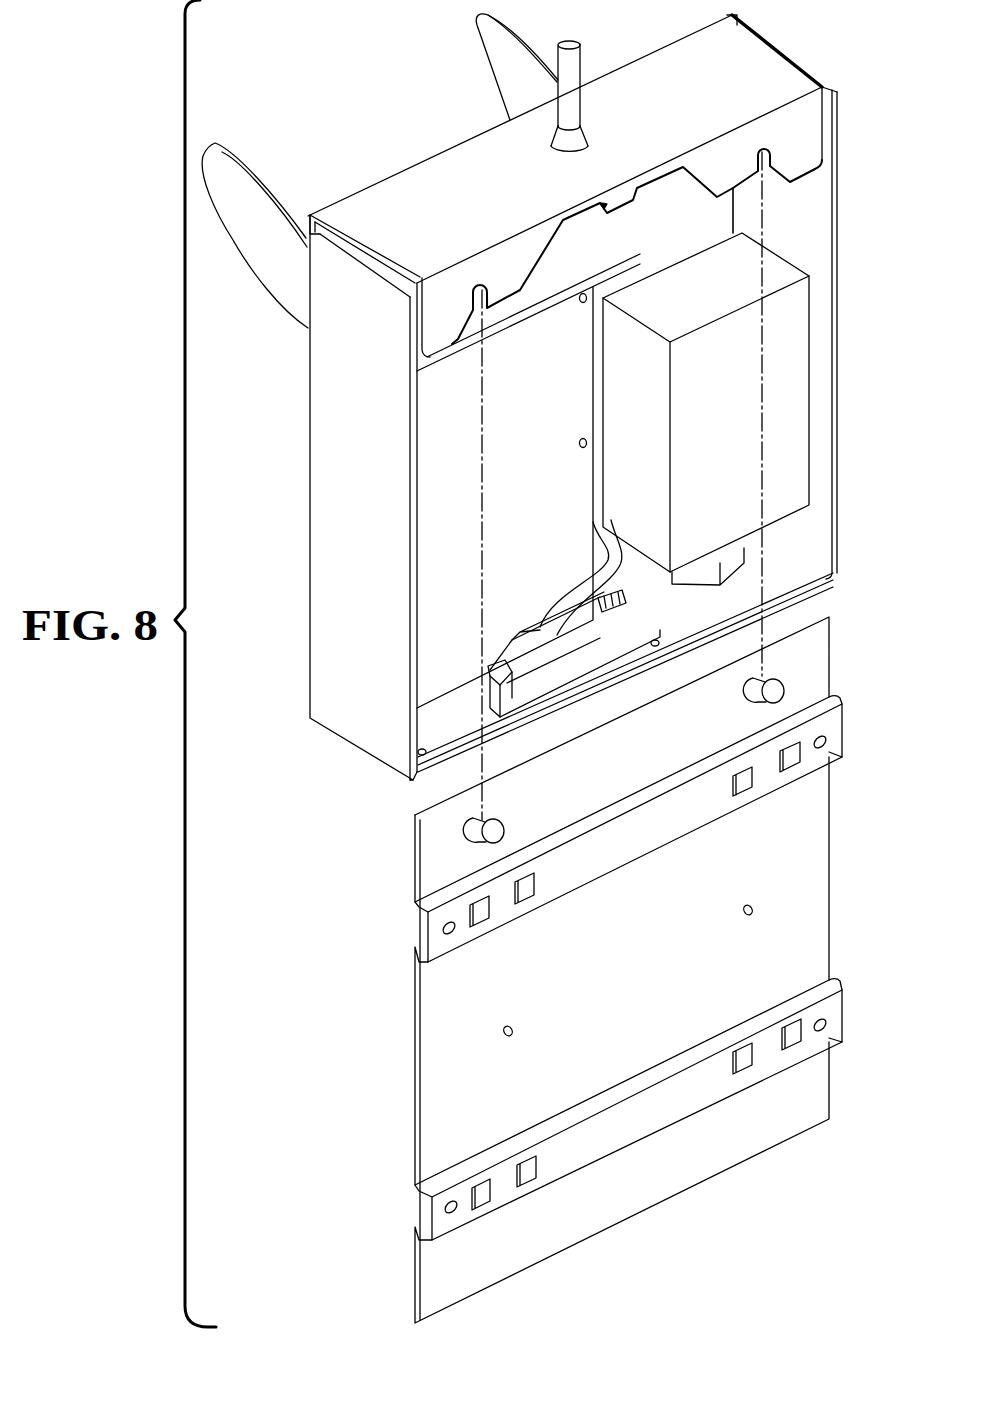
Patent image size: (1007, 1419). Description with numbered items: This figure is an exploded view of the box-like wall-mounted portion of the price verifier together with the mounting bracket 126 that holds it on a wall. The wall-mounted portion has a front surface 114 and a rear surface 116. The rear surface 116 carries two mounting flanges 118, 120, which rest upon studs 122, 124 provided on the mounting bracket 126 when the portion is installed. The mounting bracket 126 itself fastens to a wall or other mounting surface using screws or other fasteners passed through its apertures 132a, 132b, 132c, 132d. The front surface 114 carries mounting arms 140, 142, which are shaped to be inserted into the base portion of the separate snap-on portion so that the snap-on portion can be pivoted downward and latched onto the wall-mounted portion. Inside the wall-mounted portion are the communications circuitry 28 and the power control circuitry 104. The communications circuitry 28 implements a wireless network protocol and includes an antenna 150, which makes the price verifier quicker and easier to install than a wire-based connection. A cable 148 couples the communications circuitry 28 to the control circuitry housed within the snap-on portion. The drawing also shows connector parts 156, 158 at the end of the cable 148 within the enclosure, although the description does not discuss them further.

The communications circuitry 28 is at (548, 496).
The power control circuitry 104 is at (741, 436).
The front surface 114 is at (433, 163).
The rear surface 116 is at (800, 143).
The mounting flange 118 is at (467, 272).
The mounting flange 120 is at (728, 156).
The stud 122 is at (476, 830).
The stud 124 is at (781, 684).
The mounting bracket 126 is at (830, 634).
The aperture 132a is at (444, 930).
The aperture 132b is at (448, 1200).
The aperture 132c is at (826, 750).
The aperture 132d is at (826, 1032).
The mounting arm 140 is at (485, 33).
The mounting arm 142 is at (236, 165).
The cable 148 is at (566, 588).
The antenna 150 is at (568, 42).
The connector 156 is at (620, 593).
The connector housing 158 is at (590, 662).